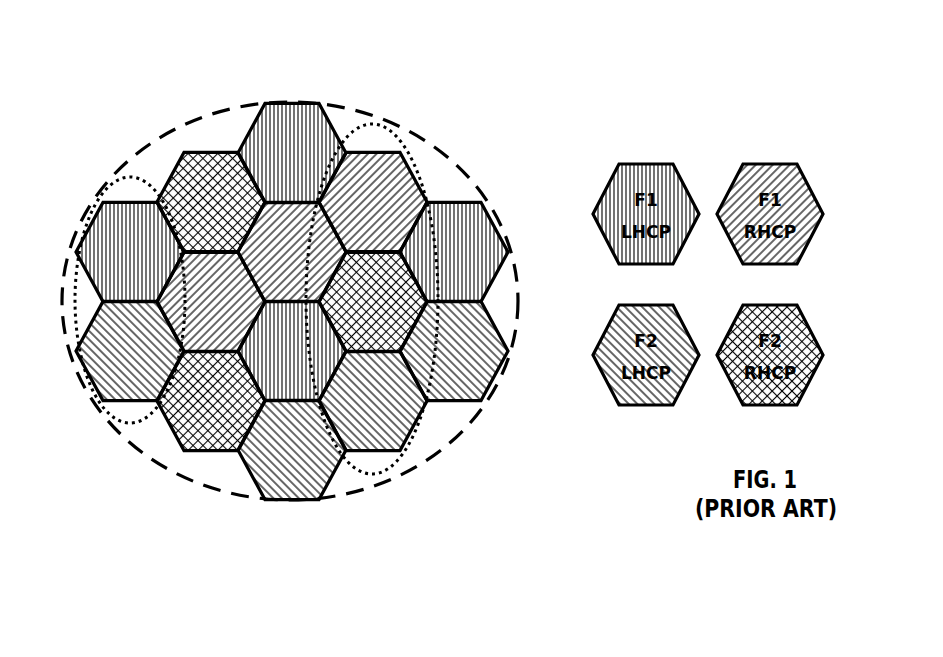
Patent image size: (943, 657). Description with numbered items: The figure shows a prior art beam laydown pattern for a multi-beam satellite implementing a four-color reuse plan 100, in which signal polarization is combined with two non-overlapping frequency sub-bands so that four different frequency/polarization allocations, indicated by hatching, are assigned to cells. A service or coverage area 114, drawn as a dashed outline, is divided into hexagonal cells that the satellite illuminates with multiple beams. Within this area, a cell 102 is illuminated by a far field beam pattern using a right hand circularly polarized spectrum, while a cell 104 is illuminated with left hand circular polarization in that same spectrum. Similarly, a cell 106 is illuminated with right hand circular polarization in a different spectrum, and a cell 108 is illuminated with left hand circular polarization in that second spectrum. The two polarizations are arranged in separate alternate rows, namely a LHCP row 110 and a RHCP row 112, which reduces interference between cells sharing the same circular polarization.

The 4-color reuse plan 100 is at (349, 290).
The cell 102 is at (367, 197).
The cell 104 is at (291, 145).
The cell 106 is at (373, 282).
The cell 108 is at (289, 207).
The LHCP row 110 is at (130, 177).
The RHCP row 112 is at (372, 473).
The service or coverage area 114 is at (450, 158).